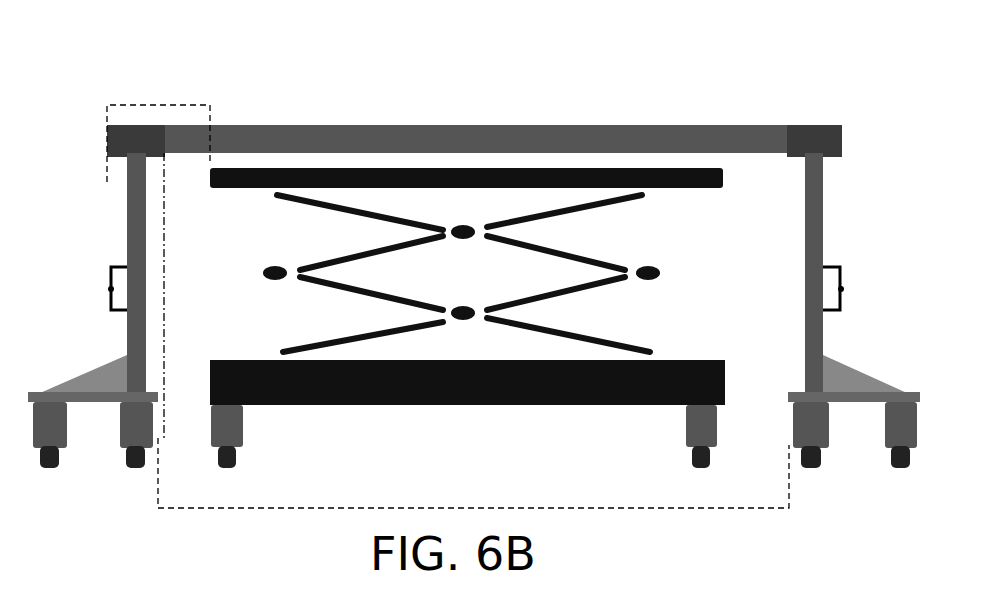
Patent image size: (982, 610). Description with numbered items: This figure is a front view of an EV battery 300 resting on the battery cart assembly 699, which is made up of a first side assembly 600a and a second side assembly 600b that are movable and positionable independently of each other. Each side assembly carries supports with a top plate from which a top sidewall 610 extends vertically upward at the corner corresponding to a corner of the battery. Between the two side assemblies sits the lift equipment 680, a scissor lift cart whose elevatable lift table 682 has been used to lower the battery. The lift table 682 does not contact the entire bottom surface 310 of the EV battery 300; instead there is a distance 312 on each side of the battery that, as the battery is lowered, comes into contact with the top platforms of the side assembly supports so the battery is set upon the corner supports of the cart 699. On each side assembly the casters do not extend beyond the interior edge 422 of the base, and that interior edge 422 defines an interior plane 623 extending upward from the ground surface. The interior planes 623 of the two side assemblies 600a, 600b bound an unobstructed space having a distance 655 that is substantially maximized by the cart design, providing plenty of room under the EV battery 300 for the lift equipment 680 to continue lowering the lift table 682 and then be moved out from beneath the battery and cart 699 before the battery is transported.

The battery cart assembly 699 is at (852, 106).
The EV battery 300 is at (462, 143).
The distance 312 is at (158, 135).
The top sidewall 610 is at (107, 140).
The bottom surface 310 is at (731, 155).
The first side assembly 600a is at (107, 310).
The second side assembly 600b is at (860, 242).
The interior plane 623 is at (170, 253).
The interior edge 422 is at (158, 392).
The lift table 682 is at (709, 190).
The lift equipment 680 is at (472, 407).
The distance 655 is at (473, 473).